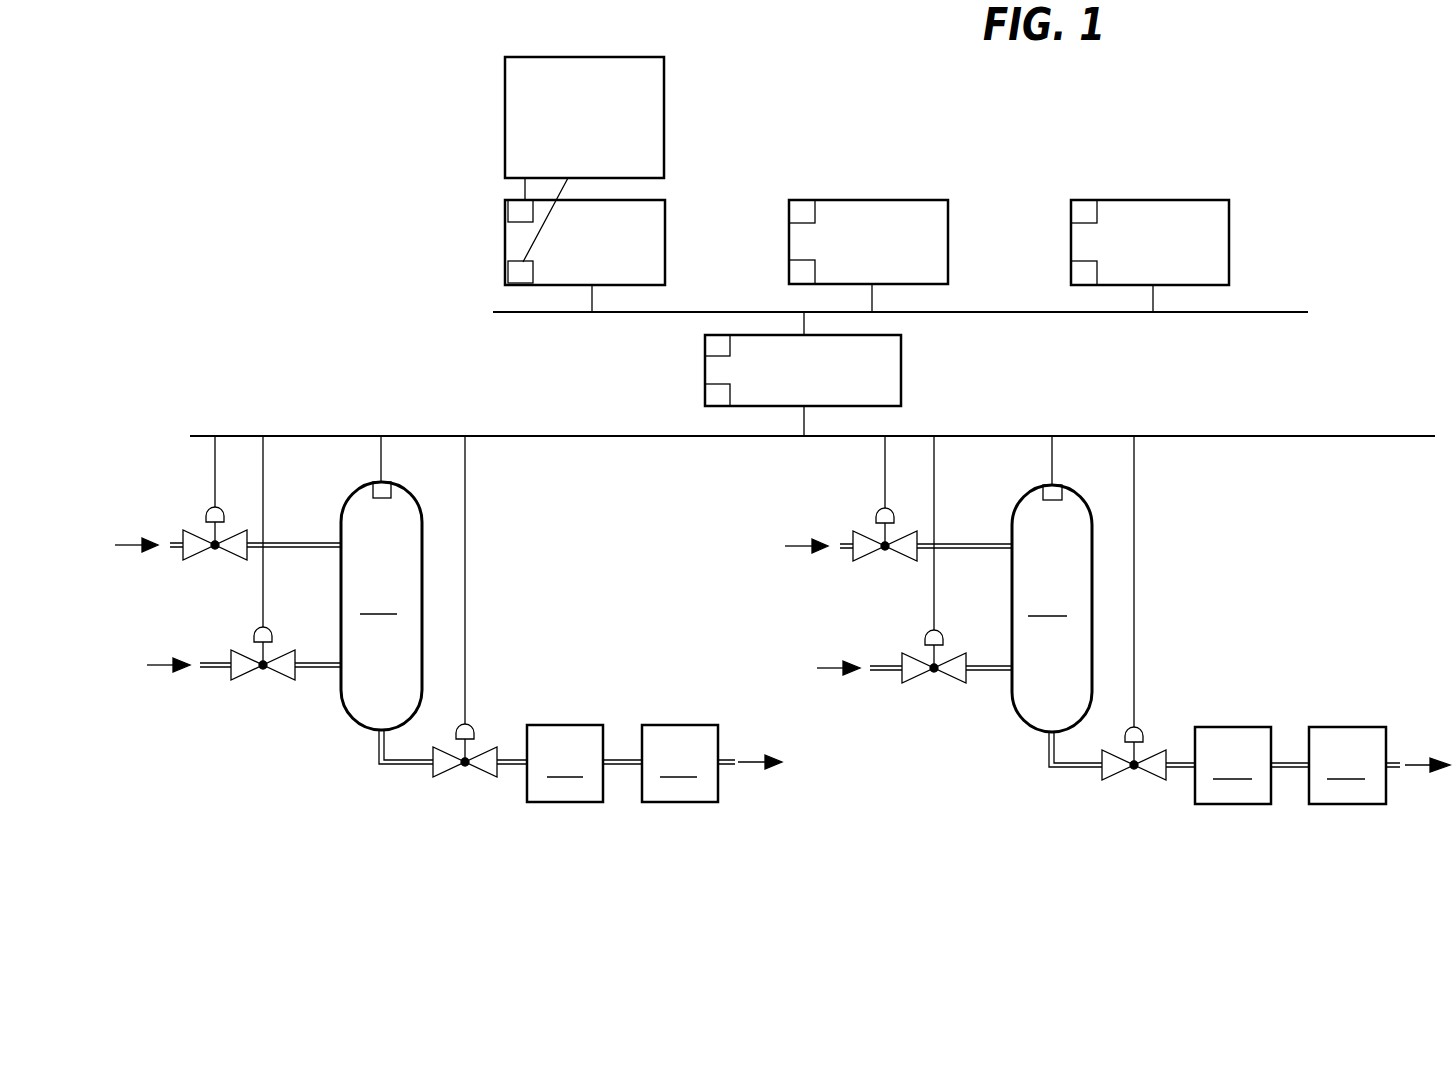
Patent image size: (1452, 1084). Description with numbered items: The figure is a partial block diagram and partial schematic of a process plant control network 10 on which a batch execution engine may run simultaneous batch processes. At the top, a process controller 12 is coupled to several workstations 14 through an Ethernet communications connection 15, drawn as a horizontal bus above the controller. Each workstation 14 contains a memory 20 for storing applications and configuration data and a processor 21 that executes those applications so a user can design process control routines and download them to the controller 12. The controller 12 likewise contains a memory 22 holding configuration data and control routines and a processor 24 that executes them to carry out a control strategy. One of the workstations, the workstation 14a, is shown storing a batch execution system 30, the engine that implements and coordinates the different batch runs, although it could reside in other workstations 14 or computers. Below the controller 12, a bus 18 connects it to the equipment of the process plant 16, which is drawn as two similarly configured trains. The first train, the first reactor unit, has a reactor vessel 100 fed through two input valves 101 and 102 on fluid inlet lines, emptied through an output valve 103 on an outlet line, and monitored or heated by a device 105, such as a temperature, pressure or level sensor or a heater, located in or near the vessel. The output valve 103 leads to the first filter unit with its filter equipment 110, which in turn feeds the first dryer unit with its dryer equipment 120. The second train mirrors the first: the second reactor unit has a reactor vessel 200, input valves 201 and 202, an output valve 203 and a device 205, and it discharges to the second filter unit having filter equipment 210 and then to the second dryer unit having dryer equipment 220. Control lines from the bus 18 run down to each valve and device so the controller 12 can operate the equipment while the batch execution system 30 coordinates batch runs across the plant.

The process plant control network 10 is at (230, 121).
The process controller 12 is at (903, 345).
The workstation 14 is at (949, 240).
The workstation 14a is at (665, 240).
The Ethernet communications connection 15 is at (606, 313).
The process plant 16 is at (277, 379).
The bus 18 is at (804, 421).
The memory 20 is at (506, 269).
The processor 21 is at (506, 210).
The memory 22 is at (705, 390).
The processor 24 is at (705, 340).
The batch execution system 30 is at (665, 118).
The reactor vessel 100 is at (349, 665).
The input valve 101 is at (195, 555).
The input valve 102 is at (242, 677).
The output valve 103 is at (447, 773).
The device 105 is at (372, 482).
The filter equipment 110 is at (575, 787).
The dryer equipment 120 is at (712, 787).
The reactor vessel 200 is at (1016, 668).
The input valve 201 is at (866, 557).
The input valve 202 is at (912, 680).
The output valve 203 is at (1115, 777).
The device 205 is at (1043, 485).
The filter equipment 210 is at (1242, 788).
The dryer equipment 220 is at (1379, 788).